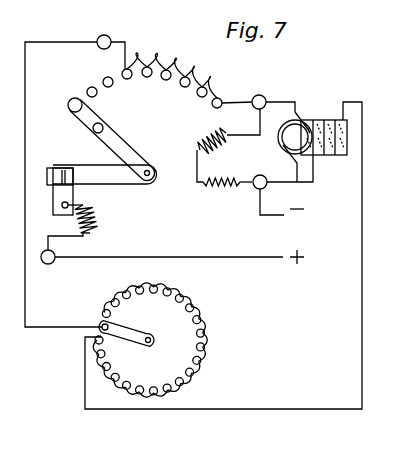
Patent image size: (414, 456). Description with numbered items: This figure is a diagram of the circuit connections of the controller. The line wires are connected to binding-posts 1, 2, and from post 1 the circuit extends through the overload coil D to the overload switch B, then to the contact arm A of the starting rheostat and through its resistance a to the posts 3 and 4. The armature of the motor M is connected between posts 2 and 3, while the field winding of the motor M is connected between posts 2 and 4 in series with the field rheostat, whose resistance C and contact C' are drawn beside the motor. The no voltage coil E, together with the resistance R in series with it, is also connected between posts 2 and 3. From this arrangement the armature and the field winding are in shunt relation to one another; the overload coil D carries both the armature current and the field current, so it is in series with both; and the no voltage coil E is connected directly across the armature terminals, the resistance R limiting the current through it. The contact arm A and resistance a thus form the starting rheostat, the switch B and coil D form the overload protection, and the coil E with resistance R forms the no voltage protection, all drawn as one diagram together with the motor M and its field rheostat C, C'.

The binding-post 4 is at (104, 33).
The binding-post 3 is at (259, 93).
The binding-post 2 is at (260, 173).
The binding-post 1 is at (48, 269).
The resistance a is at (154, 75).
The contact arm A is at (123, 145).
The overload switch B is at (95, 170).
The overload coil D is at (104, 219).
The no voltage coil E is at (206, 138).
The resistance R is at (222, 186).
The motor M is at (312, 134).
The contact of the field rheostat C' is at (126, 328).
The resistance of the field rheostat C is at (153, 340).